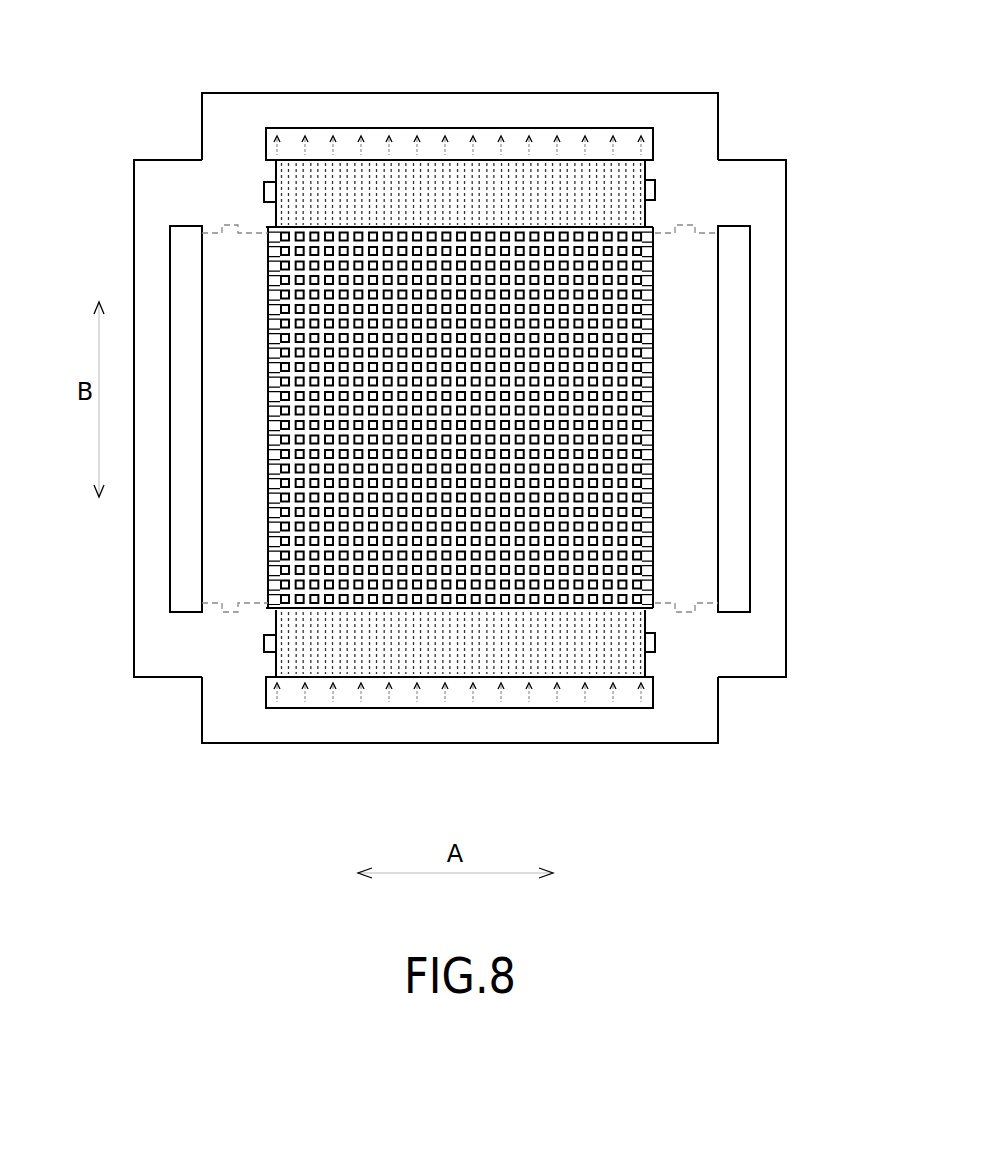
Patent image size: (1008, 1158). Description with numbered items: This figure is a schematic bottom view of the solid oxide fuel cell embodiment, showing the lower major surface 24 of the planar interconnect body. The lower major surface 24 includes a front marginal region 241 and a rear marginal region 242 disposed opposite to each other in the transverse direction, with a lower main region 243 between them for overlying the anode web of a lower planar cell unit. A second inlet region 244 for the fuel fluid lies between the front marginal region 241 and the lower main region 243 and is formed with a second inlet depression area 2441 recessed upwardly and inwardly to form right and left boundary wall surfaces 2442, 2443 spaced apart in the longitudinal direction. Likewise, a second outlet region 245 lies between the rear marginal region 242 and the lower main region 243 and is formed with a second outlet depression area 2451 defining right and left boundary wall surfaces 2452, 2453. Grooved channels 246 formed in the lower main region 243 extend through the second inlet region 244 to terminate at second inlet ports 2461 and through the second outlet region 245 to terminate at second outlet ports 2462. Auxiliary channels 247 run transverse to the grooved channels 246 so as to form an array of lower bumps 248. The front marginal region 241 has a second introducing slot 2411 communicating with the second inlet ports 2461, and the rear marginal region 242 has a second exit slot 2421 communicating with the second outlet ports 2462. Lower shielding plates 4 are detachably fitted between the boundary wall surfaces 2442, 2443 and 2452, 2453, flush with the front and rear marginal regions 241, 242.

The lower shielding plate 4 is at (285, 172).
The lower major surface 24 is at (692, 123).
The front marginal region 241 is at (233, 693).
The second introducing slot 2411 is at (295, 698).
The rear marginal region 242 is at (238, 137).
The second exit slot 2421 is at (292, 140).
The lower main region 243 is at (438, 233).
The second inlet region 244 is at (620, 622).
The second inlet depression area 2441 is at (590, 662).
The right boundary wall surface 2442 is at (275, 663).
The left boundary wall surface 2443 is at (643, 663).
The second outlet region 245 is at (645, 173).
The second outlet depression area 2451 is at (508, 158).
The right boundary wall surface 2452 is at (277, 218).
The left boundary wall surface 2453 is at (647, 212).
The grooved channel 246 is at (383, 170).
The second inlet port 2461 is at (482, 677).
The second outlet port 2462 is at (308, 160).
The auxiliary channel 247 is at (517, 258).
The lower bump 248 is at (620, 237).